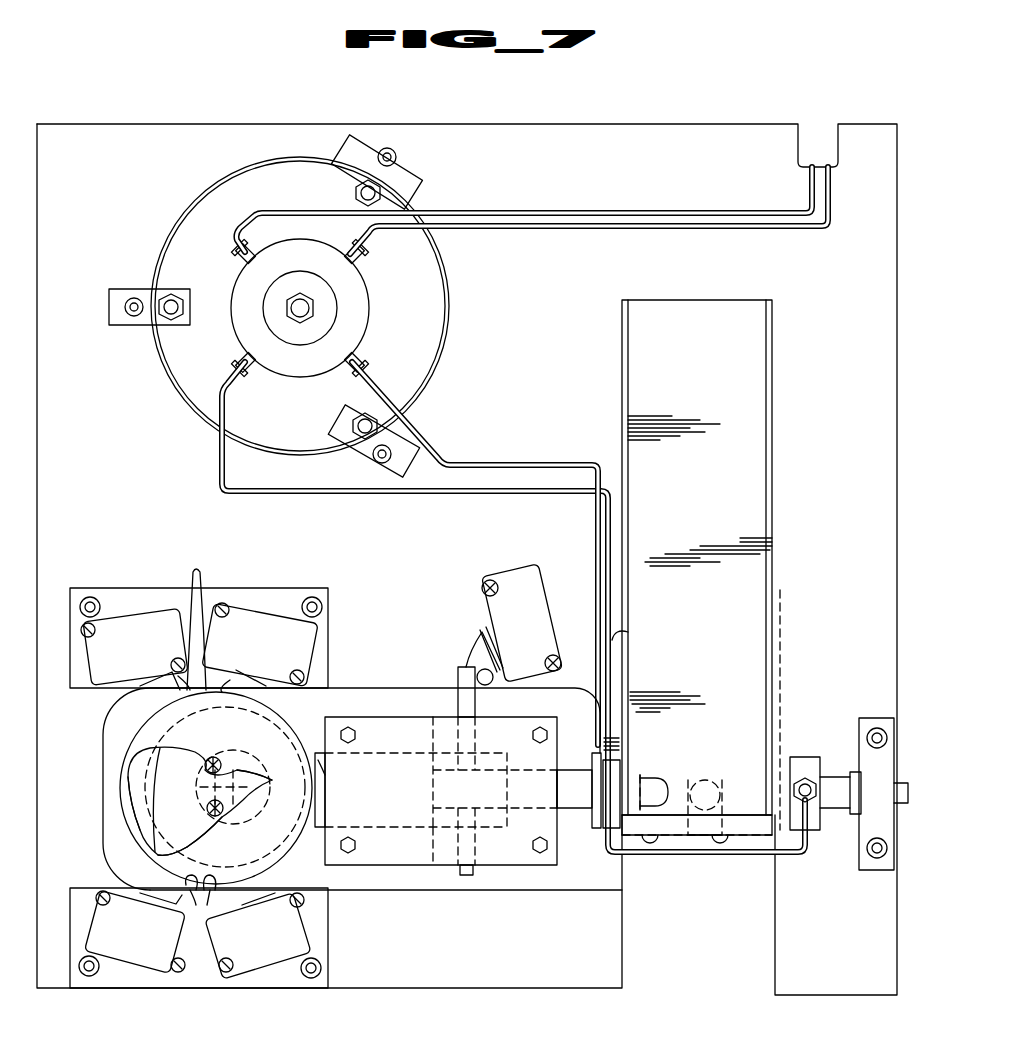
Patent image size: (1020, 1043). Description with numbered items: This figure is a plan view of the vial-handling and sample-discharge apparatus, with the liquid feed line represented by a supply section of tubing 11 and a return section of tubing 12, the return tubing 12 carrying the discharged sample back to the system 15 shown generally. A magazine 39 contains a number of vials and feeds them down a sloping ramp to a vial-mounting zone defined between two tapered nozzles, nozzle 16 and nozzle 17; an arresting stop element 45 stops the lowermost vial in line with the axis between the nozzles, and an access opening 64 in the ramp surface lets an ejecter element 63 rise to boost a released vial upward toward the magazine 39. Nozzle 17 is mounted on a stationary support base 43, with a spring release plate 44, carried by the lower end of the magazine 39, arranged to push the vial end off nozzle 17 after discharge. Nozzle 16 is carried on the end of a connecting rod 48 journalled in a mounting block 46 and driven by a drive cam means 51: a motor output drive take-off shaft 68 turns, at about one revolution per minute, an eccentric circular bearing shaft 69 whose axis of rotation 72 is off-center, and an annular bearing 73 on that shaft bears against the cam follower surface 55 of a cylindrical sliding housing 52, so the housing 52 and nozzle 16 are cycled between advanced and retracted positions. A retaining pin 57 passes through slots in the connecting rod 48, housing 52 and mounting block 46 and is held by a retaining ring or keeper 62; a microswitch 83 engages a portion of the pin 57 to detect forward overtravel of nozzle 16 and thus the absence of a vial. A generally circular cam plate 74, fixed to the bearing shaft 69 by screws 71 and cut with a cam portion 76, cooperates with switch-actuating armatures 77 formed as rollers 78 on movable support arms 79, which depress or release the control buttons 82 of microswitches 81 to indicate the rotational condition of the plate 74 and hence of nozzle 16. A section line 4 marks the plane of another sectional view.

The section line 4- 4 is at (650, 662).
The supply section of tubing 11 is at (616, 637).
The return section of tubing 12 is at (806, 856).
The system 15 is at (160, 405).
The tapered nozzle 16 is at (642, 812).
The tapered nozzle 17 is at (796, 757).
The magazine 39 is at (780, 455).
The stationary support base 43 is at (486, 962).
The spring release plate 44 is at (782, 700).
The arresting stop element 45 is at (703, 838).
The mounting block 46 is at (408, 748).
The connecting rod 48 is at (575, 842).
The drive cam means 51 is at (166, 797).
The cylindrical sliding housing 52 is at (318, 744).
The cam follower surface 55 is at (320, 768).
The retaining pin 57 is at (460, 668).
The retaining ring or keeper 62 is at (470, 876).
The ejecter element 63 is at (705, 778).
The access opening 64 is at (683, 776).
The output drive take-off shaft 68 is at (191, 772).
The circular bearing shaft 69 is at (160, 737).
The screws 71 is at (262, 782).
The shaft axis of rotation 72 is at (192, 802).
The annular bearing 73 is at (296, 708).
The cam plate 74 is at (127, 825).
The cam portion 76 is at (150, 878).
The switch-actuating armatures 77 is at (250, 852).
The rollers 78 is at (138, 920).
The movable support arms 79 is at (300, 866).
The microswitches 81 is at (141, 656).
The control buttons 82 is at (190, 898).
The microswitch 83 is at (532, 636).